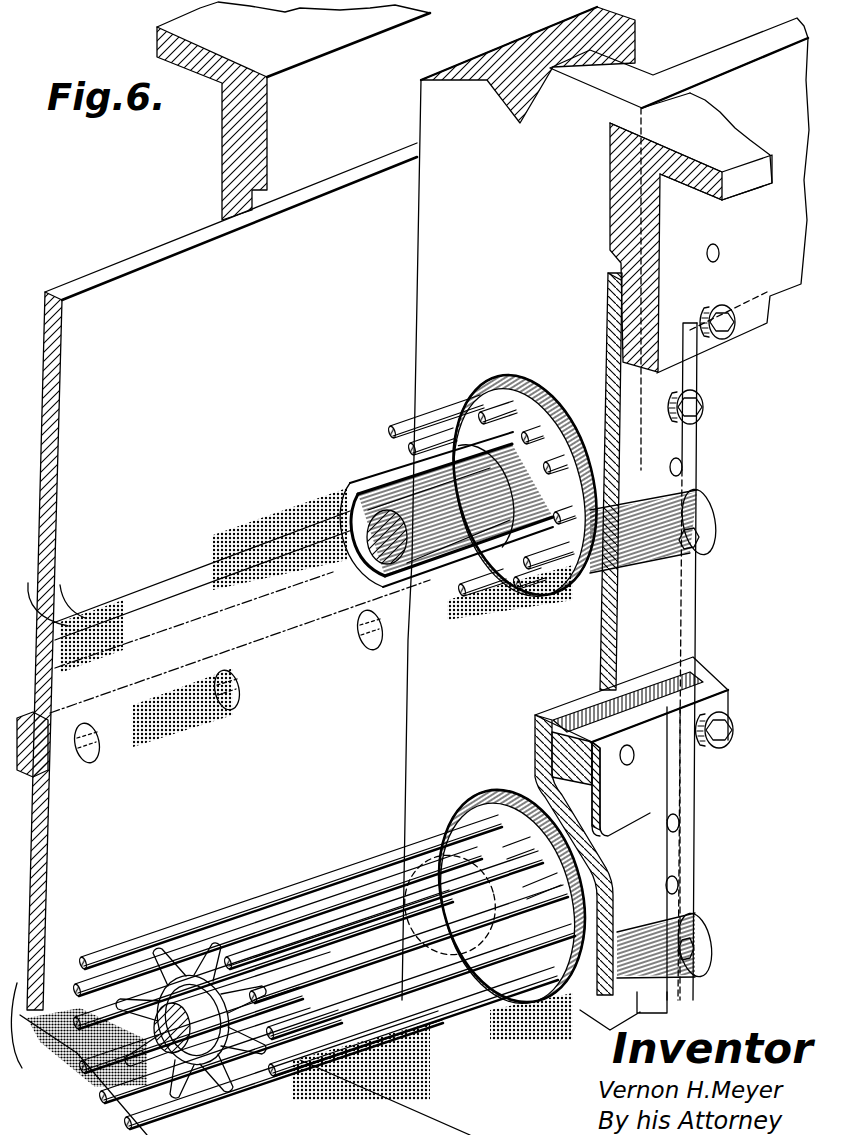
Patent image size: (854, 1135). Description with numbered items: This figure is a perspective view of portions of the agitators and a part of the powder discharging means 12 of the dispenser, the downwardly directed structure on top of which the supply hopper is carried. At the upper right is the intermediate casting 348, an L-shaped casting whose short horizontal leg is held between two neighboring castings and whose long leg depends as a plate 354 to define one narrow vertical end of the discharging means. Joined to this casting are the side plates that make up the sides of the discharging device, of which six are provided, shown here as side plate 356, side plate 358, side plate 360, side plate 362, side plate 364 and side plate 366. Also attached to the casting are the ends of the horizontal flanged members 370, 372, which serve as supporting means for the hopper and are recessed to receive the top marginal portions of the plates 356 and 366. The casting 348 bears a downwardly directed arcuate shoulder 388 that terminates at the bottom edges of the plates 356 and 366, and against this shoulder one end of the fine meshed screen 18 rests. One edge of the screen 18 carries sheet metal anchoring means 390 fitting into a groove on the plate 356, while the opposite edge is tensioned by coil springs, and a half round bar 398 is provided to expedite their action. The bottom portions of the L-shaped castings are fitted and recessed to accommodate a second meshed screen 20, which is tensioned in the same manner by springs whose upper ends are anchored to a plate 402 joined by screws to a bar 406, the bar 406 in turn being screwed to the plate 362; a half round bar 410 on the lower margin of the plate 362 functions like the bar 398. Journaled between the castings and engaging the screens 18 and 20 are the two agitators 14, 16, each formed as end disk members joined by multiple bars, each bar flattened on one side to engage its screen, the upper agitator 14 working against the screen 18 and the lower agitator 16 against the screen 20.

The powder discharging means 12 is at (738, 462).
The agitator 14 is at (350, 445).
The agitator 16 is at (322, 841).
The screen 18 is at (315, 680).
The screen 20 is at (447, 1055).
The casting 348 is at (628, 78).
The plate 354 is at (660, 994).
The side plate 356 is at (108, 270).
The side plate 358 is at (52, 670).
The side plate 360 is at (79, 1059).
The side plate 362 is at (687, 812).
The side plate 364 is at (697, 612).
The side plate 366 is at (692, 449).
The horizontal flanged member 370 is at (618, 174).
The horizontal flanged member 372 is at (222, 145).
The arcuate shoulder 388 is at (713, 493).
The sheet metal anchoring means 390 is at (53, 562).
The half round bar 398 is at (709, 519).
The plate 402 is at (663, 788).
The bar 406 is at (710, 690).
The half round bar 410 is at (693, 922).